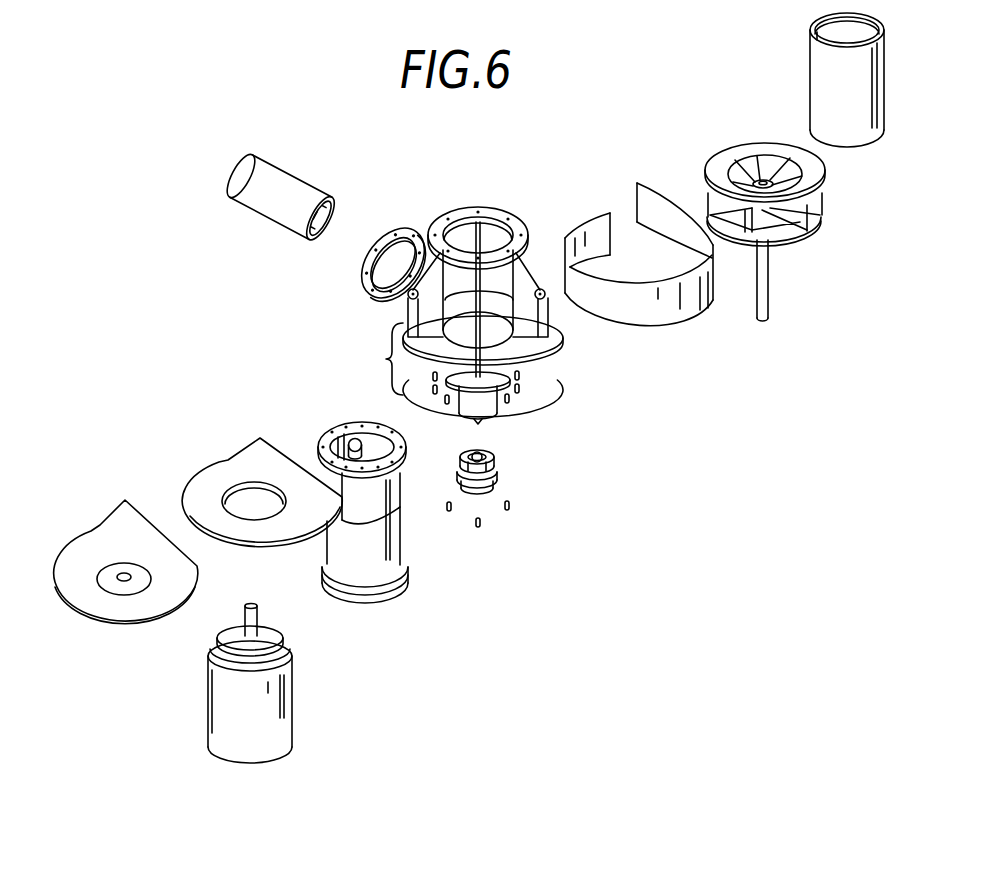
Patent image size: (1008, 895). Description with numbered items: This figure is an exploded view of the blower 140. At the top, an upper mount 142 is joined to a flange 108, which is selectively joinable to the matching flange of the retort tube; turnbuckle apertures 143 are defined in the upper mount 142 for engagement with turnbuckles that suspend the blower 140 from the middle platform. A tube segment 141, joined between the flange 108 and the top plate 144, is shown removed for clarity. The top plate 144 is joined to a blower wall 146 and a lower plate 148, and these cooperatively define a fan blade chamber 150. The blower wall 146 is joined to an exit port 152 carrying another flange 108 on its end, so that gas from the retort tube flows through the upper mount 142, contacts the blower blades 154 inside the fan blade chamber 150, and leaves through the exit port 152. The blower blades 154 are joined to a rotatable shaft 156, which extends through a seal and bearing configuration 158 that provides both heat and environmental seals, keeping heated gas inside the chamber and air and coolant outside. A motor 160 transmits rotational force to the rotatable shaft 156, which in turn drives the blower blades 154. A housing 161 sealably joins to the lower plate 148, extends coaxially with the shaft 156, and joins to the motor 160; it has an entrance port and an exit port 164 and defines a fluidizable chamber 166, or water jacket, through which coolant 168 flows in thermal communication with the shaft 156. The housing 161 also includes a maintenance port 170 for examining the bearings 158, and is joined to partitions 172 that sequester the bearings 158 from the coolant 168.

The flange 108 is at (392, 230).
The blower 140 is at (683, 468).
The tube segment 141 is at (818, 98).
The upper mount 142 is at (486, 176).
The turnbuckle apertures 143 is at (407, 296).
The top plate 144 is at (192, 478).
The blower wall 146 is at (667, 327).
The lower plate 148 is at (74, 536).
The fan blade chamber 150 is at (388, 357).
The exit port 152 is at (297, 182).
The blower blades 154 is at (707, 215).
The rotatable shaft 156 is at (772, 300).
The seal and bearing configuration 158 is at (492, 488).
The motor 160 is at (295, 718).
The housing 161 is at (338, 553).
The exit port 164 is at (320, 430).
The fluidizable chamber 166 is at (406, 438).
The coolant 168 is at (369, 442).
The maintenance port 170 is at (370, 575).
The partitions 172 is at (520, 388).